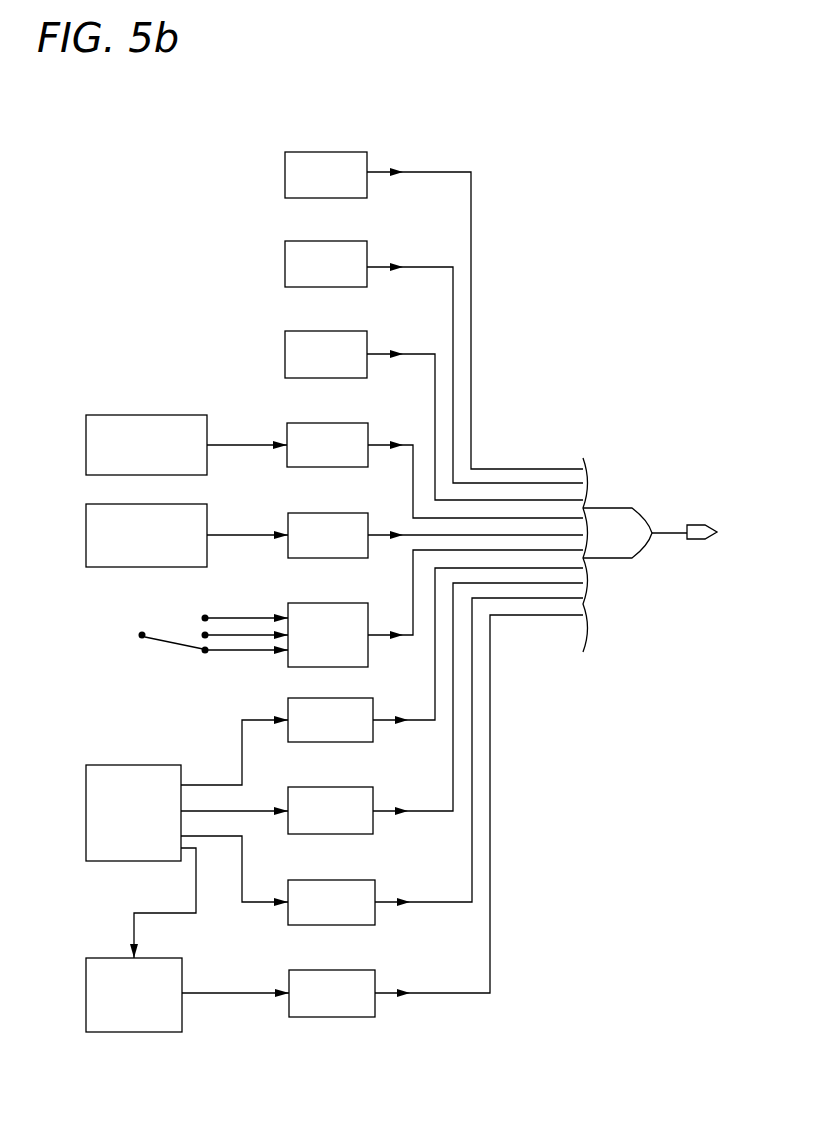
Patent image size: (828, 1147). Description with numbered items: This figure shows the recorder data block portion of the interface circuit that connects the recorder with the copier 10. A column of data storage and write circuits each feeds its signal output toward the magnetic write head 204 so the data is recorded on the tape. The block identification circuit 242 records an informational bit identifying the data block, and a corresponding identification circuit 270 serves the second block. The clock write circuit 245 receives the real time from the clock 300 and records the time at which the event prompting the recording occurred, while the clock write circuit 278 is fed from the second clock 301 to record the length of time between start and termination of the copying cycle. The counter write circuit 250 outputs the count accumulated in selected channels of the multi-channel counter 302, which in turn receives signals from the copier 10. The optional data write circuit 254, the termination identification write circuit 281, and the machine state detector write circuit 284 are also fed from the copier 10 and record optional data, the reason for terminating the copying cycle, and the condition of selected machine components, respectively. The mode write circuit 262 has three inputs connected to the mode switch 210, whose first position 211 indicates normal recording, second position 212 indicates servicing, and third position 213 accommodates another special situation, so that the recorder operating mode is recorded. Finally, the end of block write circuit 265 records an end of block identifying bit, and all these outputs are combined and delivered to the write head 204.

The copier 10 is at (95, 765).
The magnetic write head 204 is at (701, 524).
The mode switch 210 is at (155, 642).
The first position 211 is at (206, 653).
The second position 212 is at (203, 635).
The third switch position 213 is at (204, 614).
The block identification circuit 242 is at (316, 152).
The clock write circuit 245 is at (318, 423).
The counter write circuit 250 is at (318, 970).
The optional data write circuit 254 is at (318, 698).
The mode write circuit 262 is at (318, 603).
The end of block write circuit 265 is at (316, 331).
The identification circuit 270 is at (316, 241).
The clock write circuit 278 is at (318, 513).
The termination identification write circuit 281 is at (318, 787).
The machine state detector write circuit 284 is at (318, 880).
The clock 300 is at (128, 415).
The clock 301 is at (96, 567).
The multi-channel counter 302 is at (103, 948).